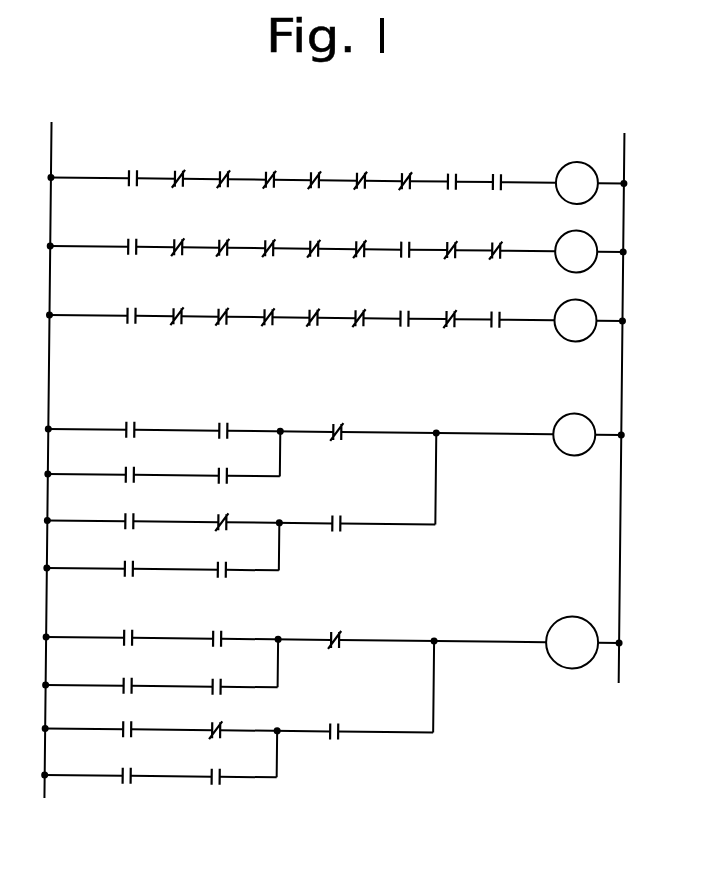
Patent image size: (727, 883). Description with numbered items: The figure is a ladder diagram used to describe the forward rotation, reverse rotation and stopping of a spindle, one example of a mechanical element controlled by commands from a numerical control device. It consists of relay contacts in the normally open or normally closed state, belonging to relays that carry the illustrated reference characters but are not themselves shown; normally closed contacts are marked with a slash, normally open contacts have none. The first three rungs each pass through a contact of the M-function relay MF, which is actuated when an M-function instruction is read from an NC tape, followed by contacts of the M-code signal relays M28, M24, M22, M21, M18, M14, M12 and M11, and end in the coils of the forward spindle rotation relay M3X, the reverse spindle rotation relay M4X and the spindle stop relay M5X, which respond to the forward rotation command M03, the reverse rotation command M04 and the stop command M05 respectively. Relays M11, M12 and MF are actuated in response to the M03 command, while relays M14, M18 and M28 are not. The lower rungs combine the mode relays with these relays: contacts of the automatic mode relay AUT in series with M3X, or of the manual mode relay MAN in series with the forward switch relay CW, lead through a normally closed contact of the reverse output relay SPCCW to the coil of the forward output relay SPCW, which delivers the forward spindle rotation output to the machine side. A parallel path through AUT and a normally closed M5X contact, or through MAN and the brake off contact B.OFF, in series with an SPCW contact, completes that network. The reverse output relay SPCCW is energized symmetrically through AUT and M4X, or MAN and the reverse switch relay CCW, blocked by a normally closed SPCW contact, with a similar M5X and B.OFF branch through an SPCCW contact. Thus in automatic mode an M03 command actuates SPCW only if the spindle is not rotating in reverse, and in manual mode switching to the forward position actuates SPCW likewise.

The M-function relay MF is at (132, 238).
The M-code signal relay M28 is at (178, 240).
The M-code signal relay M24 is at (223, 240).
The M-code signal relay M22 is at (269, 241).
The M-code signal relay M21 is at (314, 241).
The M-code signal relay M18 is at (360, 241).
The M-code signal relay M14 is at (405, 241).
The M-code signal relay M12 is at (451, 242).
The M-code signal relay M11 is at (496, 242).
The forward spindle rotation relay M3X is at (401, 300).
The reverse spindle rotation relay M4X is at (397, 439).
The spindle stop relay M5X is at (396, 520).
The forward spindle rotation command M03 is at (638, 184).
The reverse spindle rotation command M04 is at (637, 252).
The spindle stop command M05 is at (636, 321).
The forward spindle rotation output relay SPCW is at (452, 531).
The reverse spindle rotation output relay SPCCW is at (452, 574).
The automatic mode relay AUT is at (129, 571).
The manual mode relay MAN is at (128, 616).
The forward position relay CW is at (223, 467).
The reverse position relay CCW is at (217, 678).
The brake off contact B.OFF is at (219, 664).